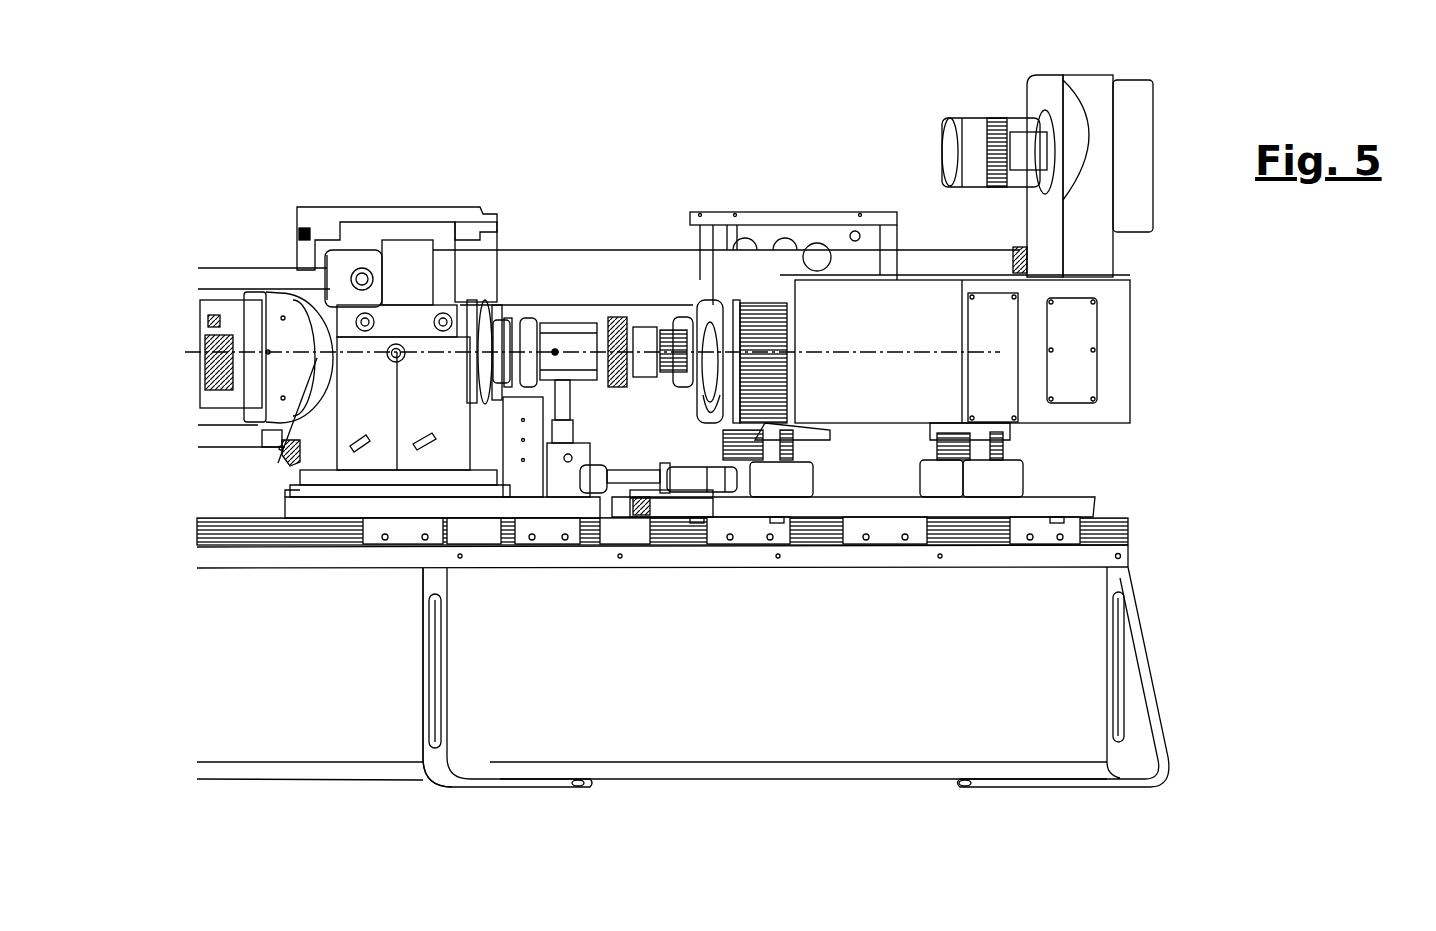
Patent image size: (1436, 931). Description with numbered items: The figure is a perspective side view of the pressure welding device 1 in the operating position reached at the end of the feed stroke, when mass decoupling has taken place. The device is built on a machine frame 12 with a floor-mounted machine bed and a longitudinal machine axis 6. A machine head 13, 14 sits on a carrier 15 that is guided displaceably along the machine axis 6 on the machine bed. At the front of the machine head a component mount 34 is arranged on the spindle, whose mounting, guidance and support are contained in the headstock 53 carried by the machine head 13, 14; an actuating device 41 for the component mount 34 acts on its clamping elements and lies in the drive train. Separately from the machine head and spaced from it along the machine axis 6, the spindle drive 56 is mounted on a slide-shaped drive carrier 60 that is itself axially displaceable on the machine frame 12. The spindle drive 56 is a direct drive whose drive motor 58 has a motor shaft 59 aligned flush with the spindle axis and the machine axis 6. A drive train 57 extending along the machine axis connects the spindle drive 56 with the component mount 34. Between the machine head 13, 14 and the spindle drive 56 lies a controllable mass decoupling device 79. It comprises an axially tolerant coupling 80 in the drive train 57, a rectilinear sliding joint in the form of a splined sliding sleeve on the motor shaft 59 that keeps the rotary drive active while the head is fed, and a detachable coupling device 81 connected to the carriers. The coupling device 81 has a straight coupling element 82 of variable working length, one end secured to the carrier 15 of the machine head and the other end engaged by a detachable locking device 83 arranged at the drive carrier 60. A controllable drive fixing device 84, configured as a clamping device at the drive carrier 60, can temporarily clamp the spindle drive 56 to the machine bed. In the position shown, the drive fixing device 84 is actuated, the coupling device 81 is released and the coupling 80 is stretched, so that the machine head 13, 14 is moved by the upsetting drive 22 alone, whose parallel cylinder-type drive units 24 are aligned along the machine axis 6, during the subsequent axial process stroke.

The pressure welding device 1 is at (800, 165).
The machine axis 6 is at (280, 462).
The machine frame 12 is at (1048, 605).
The machine head 13 is at (387, 304).
The machine head 14 is at (387, 304).
The carrier 15 is at (375, 508).
The upsetting drive 22 is at (673, 208).
The drive unit 24 is at (493, 278).
The component mount 34 is at (232, 308).
The actuating device 41 is at (557, 322).
The headstock 53 is at (375, 218).
The spindle drive 56 is at (979, 286).
The drive train 57 is at (627, 280).
The drive motor 58 is at (1063, 358).
The motor shaft 59 is at (706, 307).
The drive carrier 60 is at (836, 505).
The mass decoupling device 79 is at (641, 510).
The axially tolerant coupling 80 is at (651, 330).
The coupling device 81 is at (670, 538).
The coupling element 82 is at (627, 472).
The locking device 83 is at (690, 480).
The drive fixing device 84 is at (890, 560).